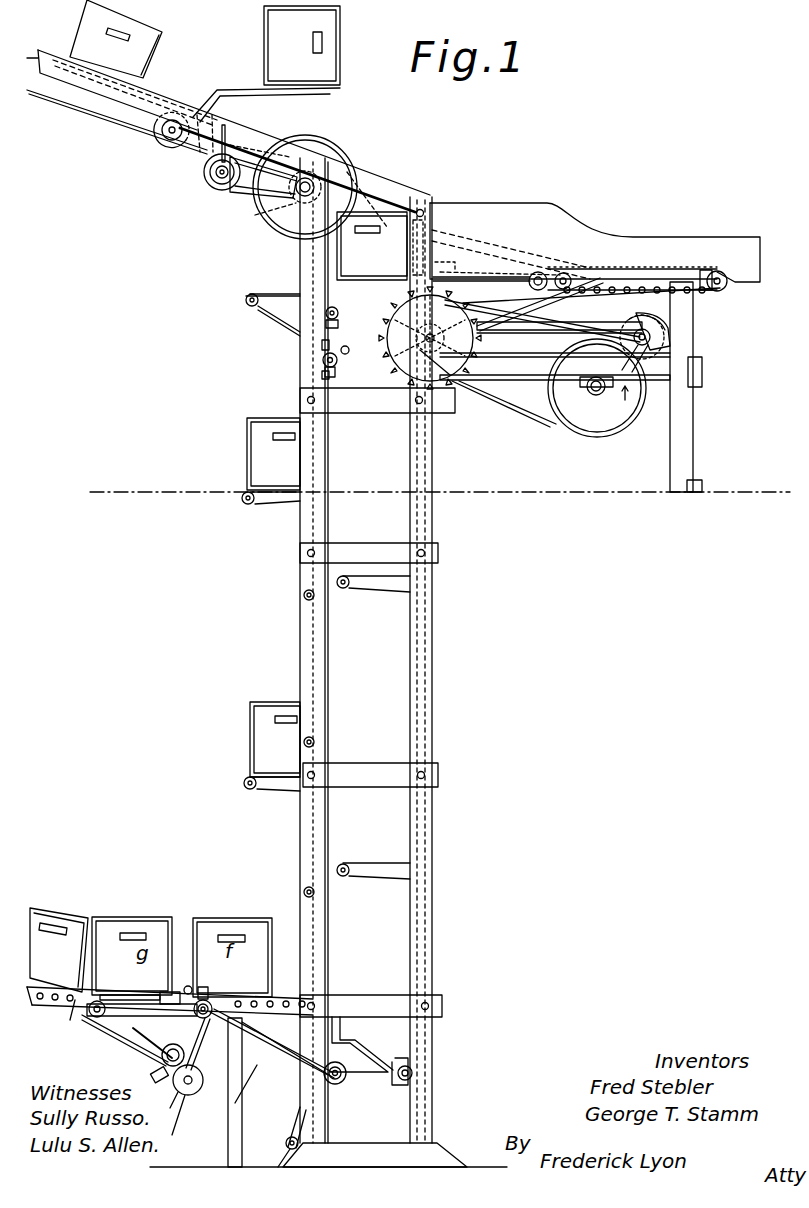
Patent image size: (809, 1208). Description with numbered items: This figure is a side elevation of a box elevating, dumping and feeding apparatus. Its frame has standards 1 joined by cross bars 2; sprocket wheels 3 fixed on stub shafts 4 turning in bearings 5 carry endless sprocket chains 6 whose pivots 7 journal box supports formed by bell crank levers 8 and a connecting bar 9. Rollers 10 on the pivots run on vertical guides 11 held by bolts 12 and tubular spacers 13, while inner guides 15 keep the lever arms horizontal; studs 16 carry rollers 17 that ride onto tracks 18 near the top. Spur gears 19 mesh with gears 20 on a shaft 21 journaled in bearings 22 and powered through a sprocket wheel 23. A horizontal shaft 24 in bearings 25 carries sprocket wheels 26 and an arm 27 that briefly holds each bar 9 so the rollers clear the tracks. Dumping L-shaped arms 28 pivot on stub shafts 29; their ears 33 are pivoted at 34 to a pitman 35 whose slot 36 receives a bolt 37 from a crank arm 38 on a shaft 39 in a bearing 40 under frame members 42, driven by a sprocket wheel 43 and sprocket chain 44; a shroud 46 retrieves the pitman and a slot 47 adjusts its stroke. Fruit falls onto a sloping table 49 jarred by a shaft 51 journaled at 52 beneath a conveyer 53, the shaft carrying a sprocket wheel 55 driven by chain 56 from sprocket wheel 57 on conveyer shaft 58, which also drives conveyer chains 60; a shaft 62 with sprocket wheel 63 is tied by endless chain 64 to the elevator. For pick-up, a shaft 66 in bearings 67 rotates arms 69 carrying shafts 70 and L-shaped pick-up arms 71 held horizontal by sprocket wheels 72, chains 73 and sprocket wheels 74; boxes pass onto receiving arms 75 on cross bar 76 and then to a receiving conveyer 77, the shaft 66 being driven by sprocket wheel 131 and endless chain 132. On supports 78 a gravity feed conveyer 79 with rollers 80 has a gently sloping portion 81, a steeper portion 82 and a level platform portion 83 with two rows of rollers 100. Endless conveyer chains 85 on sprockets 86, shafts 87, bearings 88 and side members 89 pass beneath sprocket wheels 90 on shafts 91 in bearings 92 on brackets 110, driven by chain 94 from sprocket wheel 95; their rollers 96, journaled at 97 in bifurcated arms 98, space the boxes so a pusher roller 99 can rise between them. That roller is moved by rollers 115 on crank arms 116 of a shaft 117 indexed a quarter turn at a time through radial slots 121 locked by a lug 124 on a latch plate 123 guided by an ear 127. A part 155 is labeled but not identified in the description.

The standards 1 is at (300, 645).
The cross bars 2 is at (445, 413).
The sprocket wheels 3 is at (408, 1060).
The stub shafts 4 is at (413, 1073).
The bearings 5 is at (296, 334).
The endless sprocket chains 6 is at (306, 609).
The pivots 7 is at (300, 516).
The bell crank levers 8 is at (244, 503).
The bar 9 is at (300, 566).
The rollers 10 is at (300, 528).
The vertical guides 11 is at (310, 668).
The bolts 12 is at (304, 596).
The tubular spacers 13 is at (306, 592).
The vertical guides 15 is at (328, 680).
The studs 16 is at (245, 780).
The rollers 17 is at (250, 789).
The tracks 18 is at (252, 294).
The spur gears 19 is at (339, 313).
The gears 20 is at (430, 338).
The shaft 21 is at (455, 372).
The bearings 22 is at (460, 343).
The sprocket wheel 23 is at (460, 385).
The horizontal shaft 24 is at (322, 362).
The bearings 25 is at (322, 376).
The sprocket wheels 26 is at (338, 358).
The arm 27 is at (350, 343).
The L-shaped arms 28 is at (455, 240).
The stub shafts 29 is at (425, 228).
The ears 33 is at (446, 255).
The pivot 34 is at (490, 275).
The pitman 35 is at (505, 291).
The slot 36 is at (672, 350).
The bolt 37 is at (644, 360).
The crank arm 38 is at (589, 372).
The shaft 39 is at (597, 378).
The bearing 40 is at (615, 380).
The frame members 42 is at (630, 405).
The sprocket wheel 43 is at (620, 410).
The sprocket chain 44 is at (630, 395).
The shroud 46 is at (655, 325).
The slot 47 is at (660, 340).
The table 49 is at (528, 252).
The shaft 51 is at (540, 270).
The journal 52 is at (530, 272).
The conveyer 53 is at (640, 237).
The sprocket wheel 55 is at (543, 296).
The sprocket chain 56 is at (565, 298).
The sprocket wheel 57 is at (540, 304).
The conveyer shaft 58 is at (565, 270).
The conveyer chains 60 is at (614, 268).
The shaft 62 is at (725, 288).
The sprocket wheel 63 is at (708, 292).
The endless chain 64 is at (235, 998).
The shaft 66 is at (306, 197).
The bearings 67 is at (372, 246).
The arms 69 is at (290, 157).
The shafts 70 is at (218, 190).
The L-shaped box pick-up arms 71 is at (247, 150).
The sprocket wheels 72 is at (213, 131).
The endless chains 73 is at (243, 193).
The sprocket wheels 74 is at (284, 205).
The box receiving arms 75 is at (292, 90).
The cross bar 76 is at (185, 150).
The receiving conveyer 77 is at (58, 62).
The supports 78 is at (245, 1152).
The gravity feed conveyer 79 is at (47, 983).
The rollers 80 is at (42, 1008).
The conveyer portion 81 is at (212, 1000).
The conveyer portion 82 is at (76, 1021).
The conveyer portion 83 is at (283, 998).
The endless conveyer chains 85 is at (125, 1040).
The sprockets 86 is at (98, 1018).
The shafts 87 is at (118, 1016).
The bearings 88 is at (110, 995).
The side members 89 is at (136, 997).
The sprocket wheels 90 is at (162, 1062).
The shafts 91 is at (152, 1043).
The bearings 92 is at (203, 1078).
The endless sprocket chain 94 is at (282, 1045).
The sprocket wheel 95 is at (330, 1078).
The rollers 96 is at (187, 985).
The journal 97 is at (204, 992).
The bifurcated arm 98 is at (203, 987).
The roller 99 is at (175, 992).
The rollers 100 is at (364, 1006).
The brackets 110 is at (198, 1048).
The rollers 115 is at (182, 1121).
The crank arms 116 is at (182, 1098).
The shaft 117 is at (188, 1098).
The radially extending slots 121 is at (164, 1101).
The latch plate 123 is at (203, 1086).
The lug 124 is at (199, 1093).
The ear 127 is at (149, 1082).
The sprocket wheel 131 is at (327, 158).
The endless chain 132 is at (353, 172).
The bracket 155 is at (418, 384).